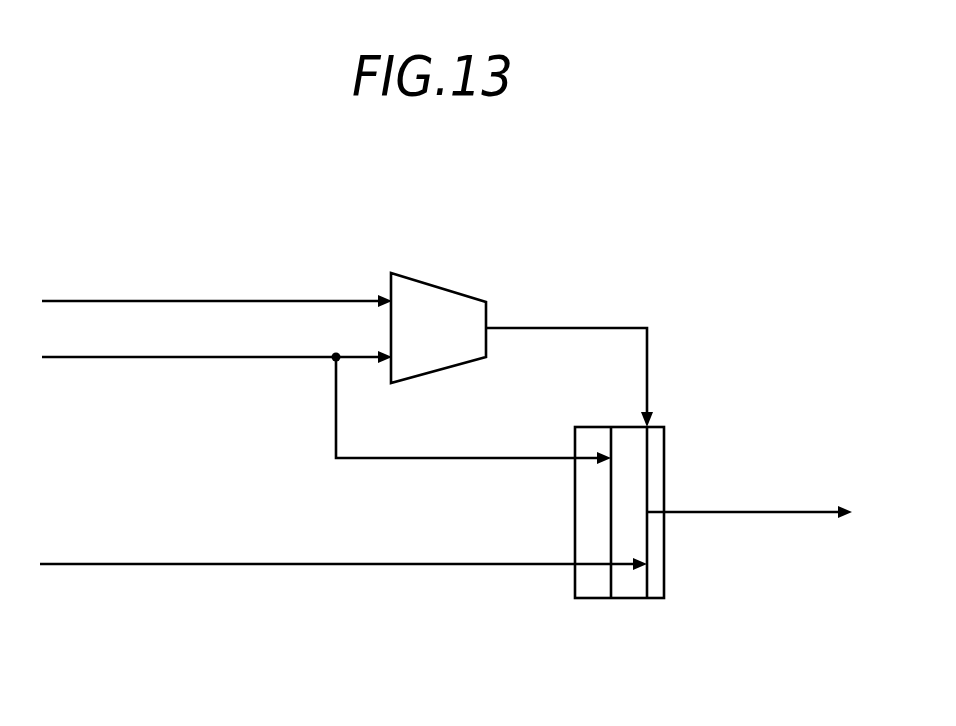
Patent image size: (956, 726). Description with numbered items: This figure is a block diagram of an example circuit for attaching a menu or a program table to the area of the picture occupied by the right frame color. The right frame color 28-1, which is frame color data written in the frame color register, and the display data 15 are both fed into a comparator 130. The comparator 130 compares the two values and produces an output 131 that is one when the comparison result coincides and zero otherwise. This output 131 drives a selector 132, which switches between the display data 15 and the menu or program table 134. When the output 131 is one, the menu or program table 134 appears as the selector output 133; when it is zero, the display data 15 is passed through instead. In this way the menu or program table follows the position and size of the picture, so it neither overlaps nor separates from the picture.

The right frame color 28-1 is at (90, 301).
The display data 15 is at (135, 357).
The comparator 130 is at (455, 293).
The output of the comparator 131 is at (647, 361).
The selector 132 is at (627, 598).
The selector output 133 is at (745, 512).
The menu or program table 134 is at (132, 564).